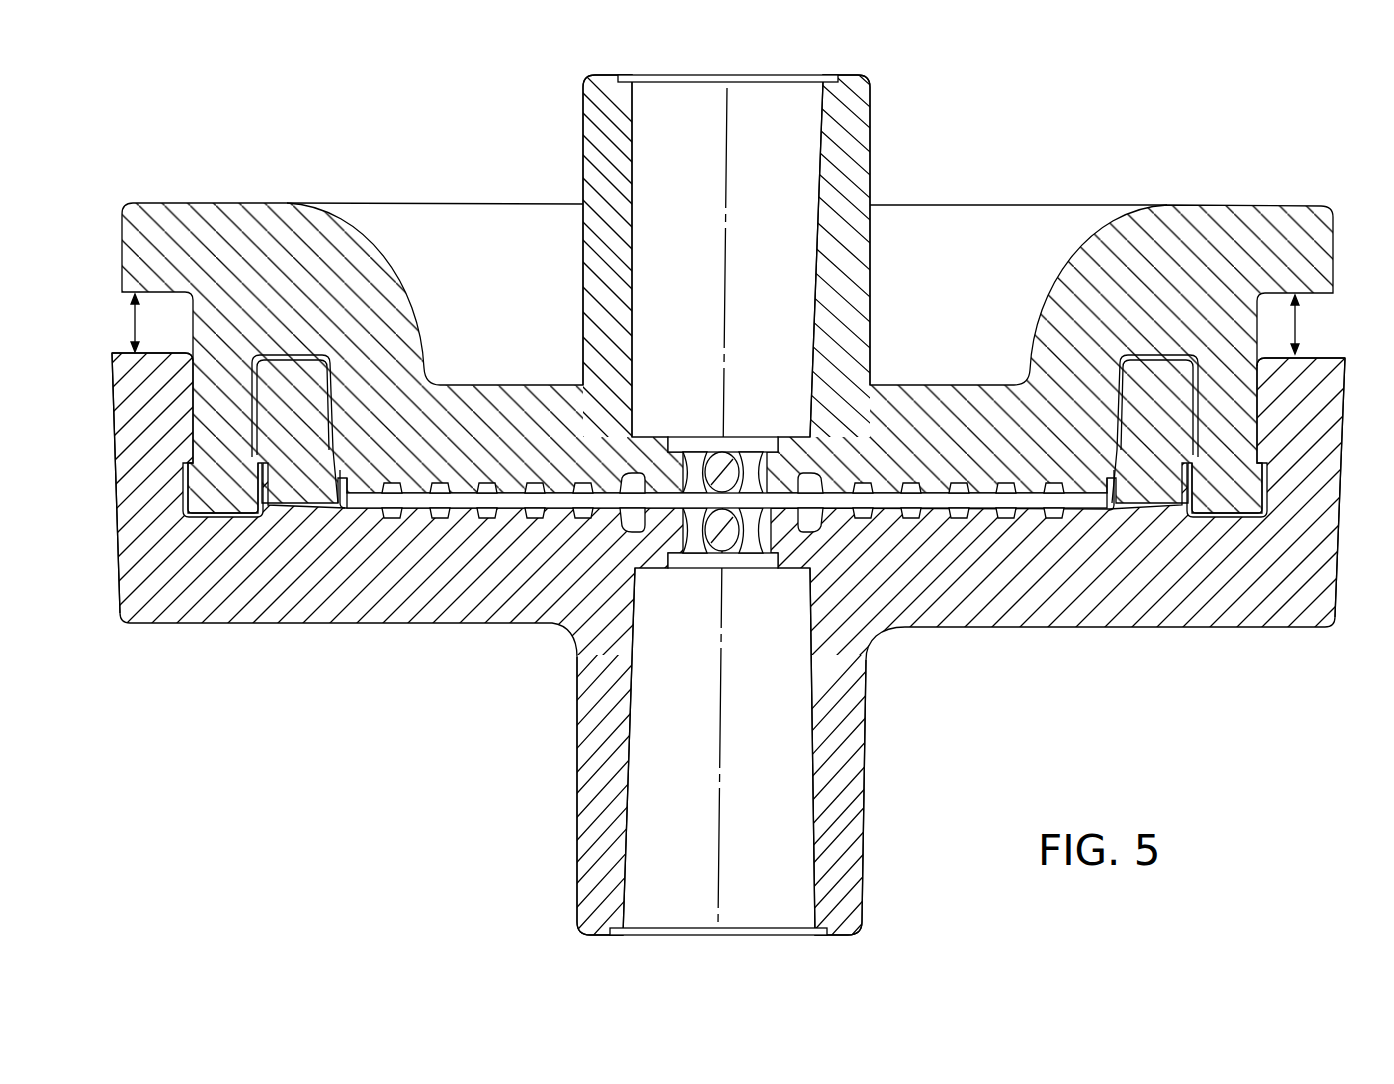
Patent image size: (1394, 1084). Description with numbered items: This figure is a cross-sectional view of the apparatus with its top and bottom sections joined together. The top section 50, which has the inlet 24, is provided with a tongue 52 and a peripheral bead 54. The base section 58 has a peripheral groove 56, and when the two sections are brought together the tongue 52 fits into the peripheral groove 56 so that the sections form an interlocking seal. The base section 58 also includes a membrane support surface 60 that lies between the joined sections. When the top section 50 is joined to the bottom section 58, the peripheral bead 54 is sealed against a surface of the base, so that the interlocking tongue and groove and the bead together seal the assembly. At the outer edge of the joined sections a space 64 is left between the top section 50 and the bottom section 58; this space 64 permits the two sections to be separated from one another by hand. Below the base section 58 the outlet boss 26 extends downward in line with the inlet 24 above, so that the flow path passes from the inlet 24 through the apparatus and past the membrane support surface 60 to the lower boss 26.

The inlet 24 is at (795, 143).
The lower tubular boss 26 is at (793, 768).
The top section 50 is at (928, 406).
The tongue 52 is at (1242, 426).
The peripheral bead 54 is at (1113, 467).
The peripheral groove 56 is at (1272, 487).
The base section 58 is at (1086, 620).
The membrane support surface 60 is at (470, 497).
The space 64 is at (1295, 326).